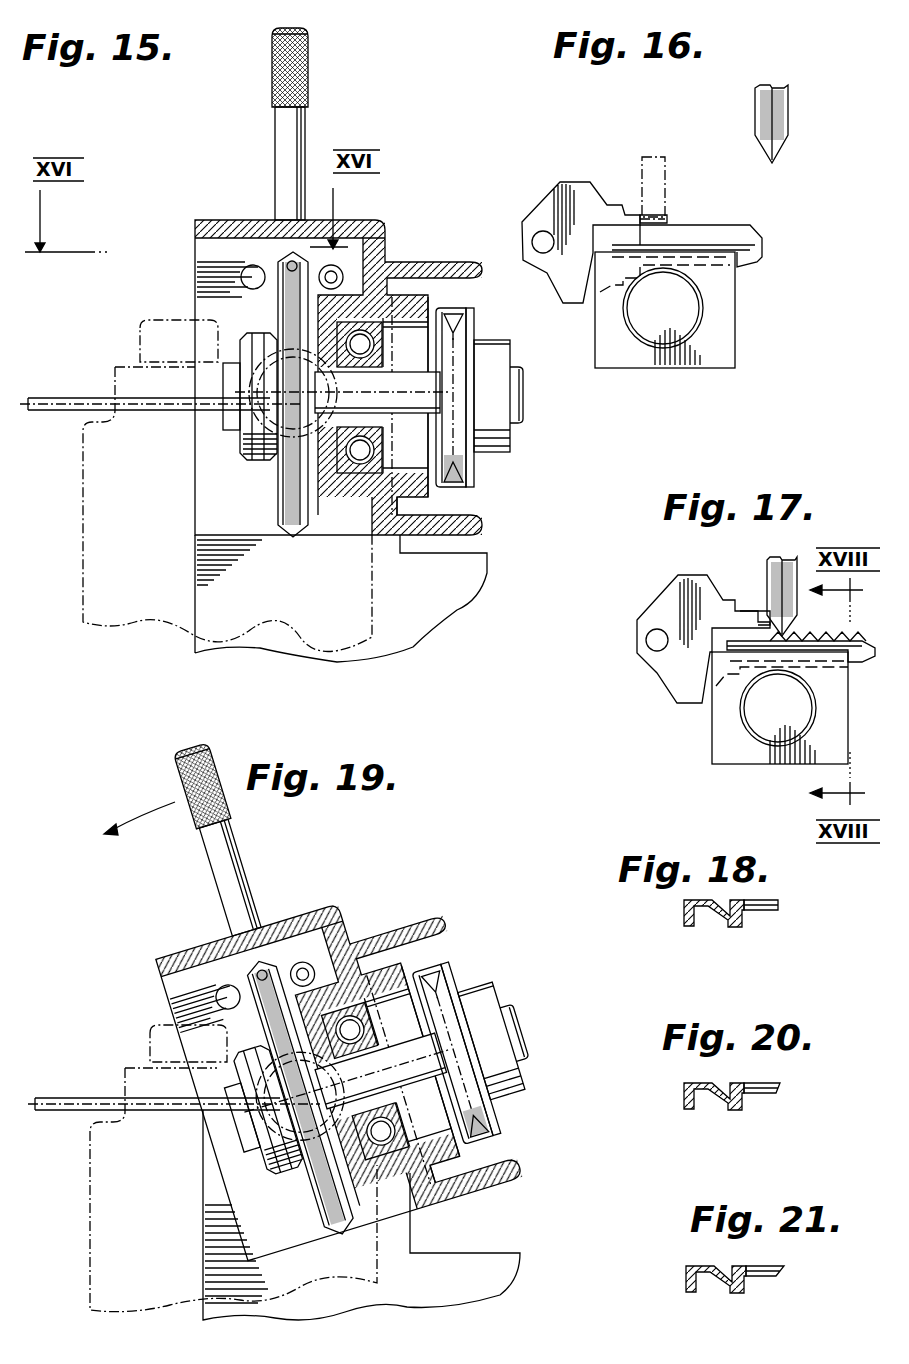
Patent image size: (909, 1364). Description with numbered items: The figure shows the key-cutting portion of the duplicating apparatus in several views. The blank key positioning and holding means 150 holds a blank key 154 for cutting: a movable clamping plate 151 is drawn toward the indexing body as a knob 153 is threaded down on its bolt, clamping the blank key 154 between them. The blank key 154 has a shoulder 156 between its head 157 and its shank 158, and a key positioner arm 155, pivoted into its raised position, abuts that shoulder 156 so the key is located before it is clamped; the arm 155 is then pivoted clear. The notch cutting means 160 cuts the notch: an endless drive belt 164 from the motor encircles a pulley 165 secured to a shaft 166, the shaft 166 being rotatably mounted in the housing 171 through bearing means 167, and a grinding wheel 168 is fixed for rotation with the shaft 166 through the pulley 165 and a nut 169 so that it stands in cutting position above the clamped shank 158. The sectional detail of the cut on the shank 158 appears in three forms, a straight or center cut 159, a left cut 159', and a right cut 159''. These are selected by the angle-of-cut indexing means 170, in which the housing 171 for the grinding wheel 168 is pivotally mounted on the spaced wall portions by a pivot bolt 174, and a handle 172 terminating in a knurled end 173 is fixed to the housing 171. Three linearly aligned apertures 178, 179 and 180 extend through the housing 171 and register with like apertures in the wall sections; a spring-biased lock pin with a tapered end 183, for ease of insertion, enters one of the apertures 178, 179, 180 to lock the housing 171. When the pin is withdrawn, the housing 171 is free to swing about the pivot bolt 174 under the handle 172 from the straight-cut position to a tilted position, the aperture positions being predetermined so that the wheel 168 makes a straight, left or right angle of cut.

In FIG. 15, the blank key positioning and holding means 150 is at (78, 550).
In FIG. 19, the blank key positioning and holding means 150 is at (82, 1175).
In FIG. 16, the movable clamping plate 151 is at (723, 355).
In FIG. 17, the movable clamping plate 151 is at (735, 758).
In FIG. 15, the knob 153 is at (157, 320).
In FIG. 16, the knob 153 is at (680, 308).
In FIG. 17, the knob 153 is at (762, 714).
In FIG. 19, the knob 153 is at (153, 1027).
In FIG. 15, the blank key 154 is at (46, 394).
In FIG. 16, the blank key 154 is at (569, 175).
In FIG. 17, the blank key 154 is at (625, 651).
In FIG. 19, the blank key 154 is at (63, 1092).
In FIG. 16, the key positioner arm 155 is at (665, 158).
In FIG. 16, the shoulder 156 is at (660, 222).
In FIG. 17, the shoulder 156 is at (762, 620).
In FIG. 16, the head 157 is at (532, 222).
In FIG. 17, the head 157 is at (676, 597).
In FIG. 16, the shank 158 is at (720, 236).
In FIG. 17, the shank 158 is at (830, 640).
In FIG. 18, the shank 158 is at (696, 928).
In FIG. 20, the shank 158 is at (700, 1112).
In FIG. 21, the shank 158 is at (700, 1295).
In FIG. 17, the straight or center cut 159 is at (783, 630).
In FIG. 18, the straight or center cut 159 is at (769, 928).
In FIG. 20, the left cut 159' is at (767, 1112).
In FIG. 21, the right cut 159'' is at (789, 1294).
In FIG. 15, the notch cutting means 160 is at (528, 404).
In FIG. 19, the notch cutting means 160 is at (450, 952).
In FIG. 15, the endless drive belt 164 is at (460, 488).
In FIG. 19, the endless drive belt 164 is at (467, 1076).
In FIG. 15, the pulley 165 is at (475, 462).
In FIG. 19, the pulley 165 is at (456, 968).
In FIG. 15, the shaft 166 is at (342, 392).
In FIG. 19, the shaft 166 is at (348, 1081).
In FIG. 15, the bearing means 167 is at (358, 462).
In FIG. 19, the bearing means 167 is at (392, 1142).
In FIG. 15, the grinding wheel 168 is at (290, 538).
In FIG. 16, the grinding wheel 168 is at (790, 135).
In FIG. 17, the grinding wheel 168 is at (798, 570).
In FIG. 19, the grinding wheel 168 is at (341, 1238).
In FIG. 15, the nut 169 is at (243, 452).
In FIG. 19, the nut 169 is at (242, 1176).
In FIG. 15, the angle-of-cut indexing means 170 is at (393, 162).
In FIG. 19, the angle-of-cut indexing means 170 is at (406, 872).
In FIG. 15, the housing 171 is at (373, 222).
In FIG. 19, the housing 171 is at (340, 910).
In FIG. 15, the handle 172 is at (276, 118).
In FIG. 19, the handle 172 is at (226, 838).
In FIG. 15, the knurled end 173 is at (309, 52).
In FIG. 19, the knurled end 173 is at (192, 772).
In FIG. 15, the pivot bolt 174 is at (280, 465).
In FIG. 19, the pivot bolt 174 is at (312, 1170).
In FIG. 15, the aperture 178 is at (247, 277).
In FIG. 19, the aperture 178 is at (222, 992).
In FIG. 15, the aperture 179 is at (283, 262).
In FIG. 19, the aperture 179 is at (270, 950).
In FIG. 15, the aperture 180 is at (336, 272).
In FIG. 19, the aperture 180 is at (362, 926).
In FIG. 15, the tapered end 183 is at (300, 252).
In FIG. 19, the tapered end 183 is at (305, 966).